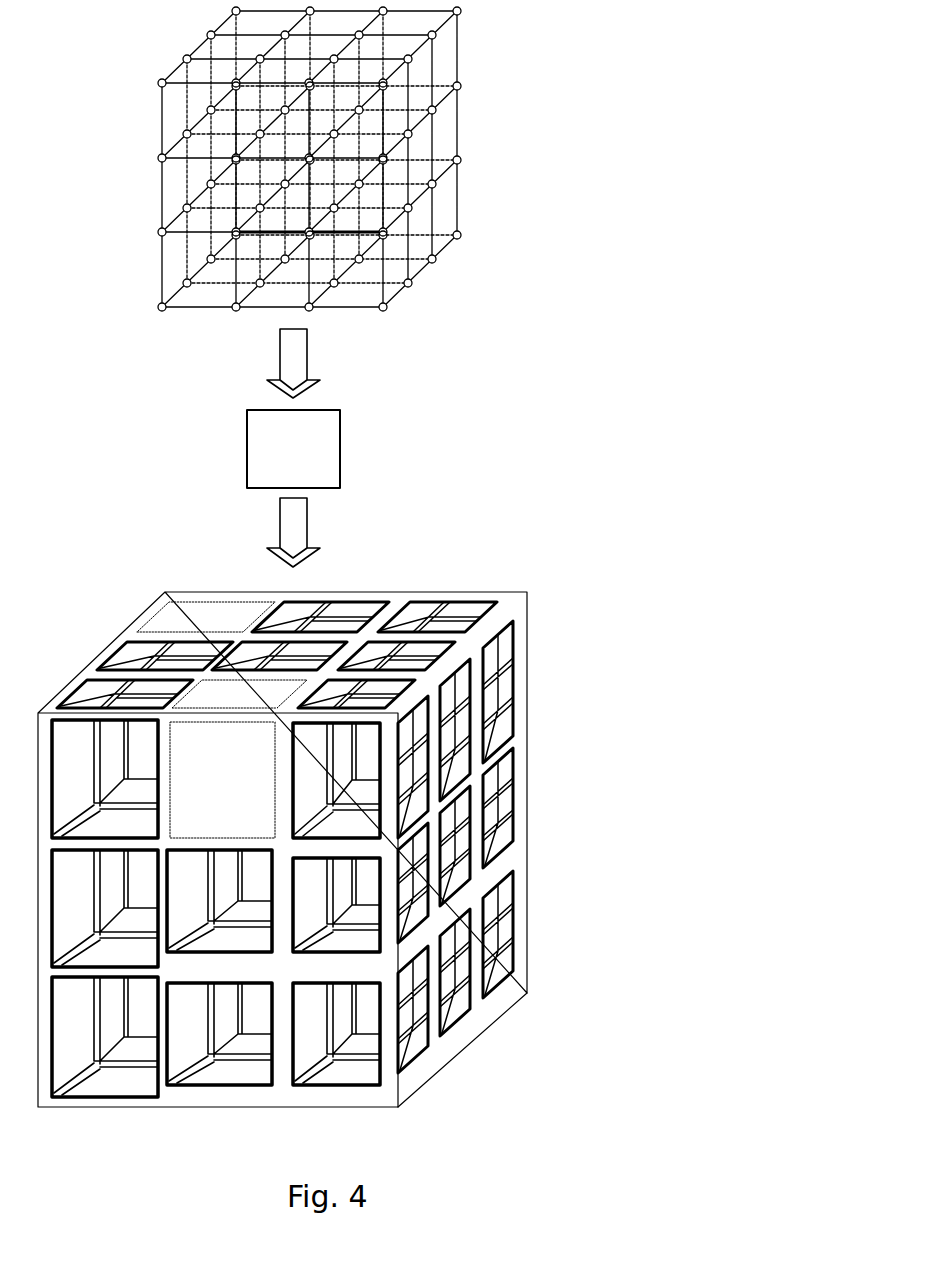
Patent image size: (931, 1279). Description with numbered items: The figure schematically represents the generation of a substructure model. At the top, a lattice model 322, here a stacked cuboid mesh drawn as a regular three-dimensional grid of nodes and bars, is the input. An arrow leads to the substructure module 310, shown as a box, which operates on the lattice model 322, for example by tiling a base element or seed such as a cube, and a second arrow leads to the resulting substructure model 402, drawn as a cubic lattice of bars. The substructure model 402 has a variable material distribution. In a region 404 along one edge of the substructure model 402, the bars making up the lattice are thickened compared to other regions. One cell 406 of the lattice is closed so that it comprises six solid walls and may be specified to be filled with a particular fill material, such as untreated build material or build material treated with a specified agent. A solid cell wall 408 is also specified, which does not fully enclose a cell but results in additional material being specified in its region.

The lattice model 322 is at (462, 14).
The substructure module 310 is at (293, 449).
The substructure model 402 is at (311, 855).
The region 404 is at (450, 1082).
The cell 406 is at (238, 759).
The solid cell wall 408 is at (206, 617).